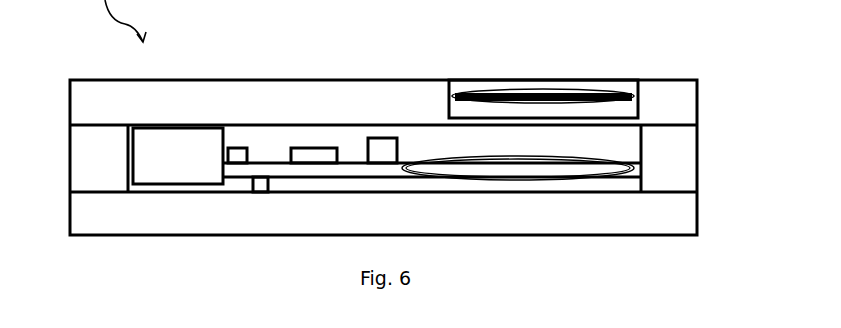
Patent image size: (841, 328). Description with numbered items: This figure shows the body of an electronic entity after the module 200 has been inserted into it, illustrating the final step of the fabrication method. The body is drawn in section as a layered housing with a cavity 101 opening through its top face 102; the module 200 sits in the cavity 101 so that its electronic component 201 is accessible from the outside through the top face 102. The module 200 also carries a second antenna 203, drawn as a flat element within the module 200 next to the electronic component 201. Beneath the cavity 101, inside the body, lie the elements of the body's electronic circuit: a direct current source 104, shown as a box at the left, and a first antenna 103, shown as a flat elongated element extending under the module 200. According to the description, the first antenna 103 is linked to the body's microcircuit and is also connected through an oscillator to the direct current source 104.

The cavity 101 is at (638, 80).
The top face 102 is at (230, 80).
The first antenna 103 is at (557, 175).
The direct current source 104 is at (178, 156).
The module 200 is at (470, 78).
The electronic component 201 is at (533, 80).
The second antenna 203 is at (585, 90).